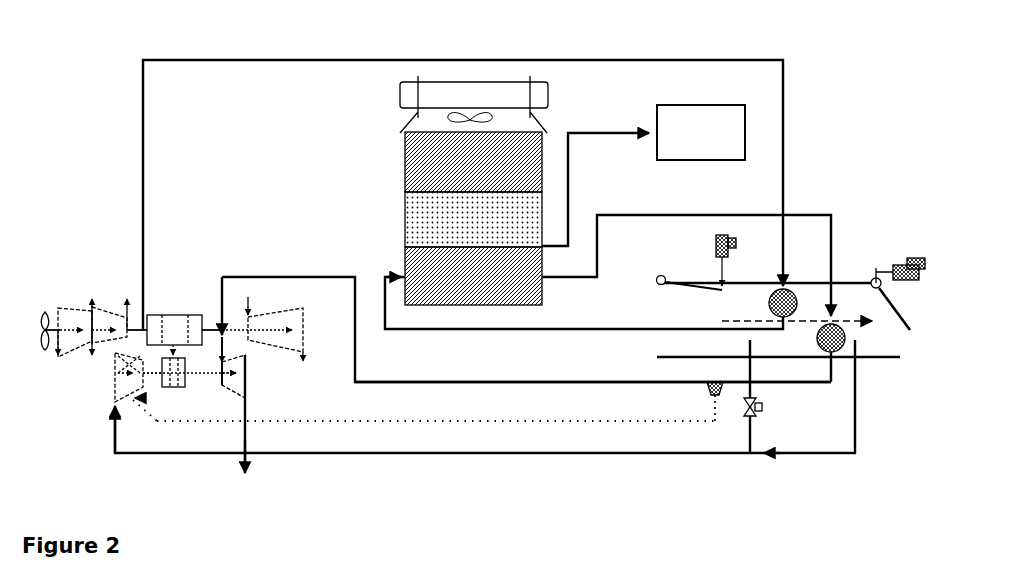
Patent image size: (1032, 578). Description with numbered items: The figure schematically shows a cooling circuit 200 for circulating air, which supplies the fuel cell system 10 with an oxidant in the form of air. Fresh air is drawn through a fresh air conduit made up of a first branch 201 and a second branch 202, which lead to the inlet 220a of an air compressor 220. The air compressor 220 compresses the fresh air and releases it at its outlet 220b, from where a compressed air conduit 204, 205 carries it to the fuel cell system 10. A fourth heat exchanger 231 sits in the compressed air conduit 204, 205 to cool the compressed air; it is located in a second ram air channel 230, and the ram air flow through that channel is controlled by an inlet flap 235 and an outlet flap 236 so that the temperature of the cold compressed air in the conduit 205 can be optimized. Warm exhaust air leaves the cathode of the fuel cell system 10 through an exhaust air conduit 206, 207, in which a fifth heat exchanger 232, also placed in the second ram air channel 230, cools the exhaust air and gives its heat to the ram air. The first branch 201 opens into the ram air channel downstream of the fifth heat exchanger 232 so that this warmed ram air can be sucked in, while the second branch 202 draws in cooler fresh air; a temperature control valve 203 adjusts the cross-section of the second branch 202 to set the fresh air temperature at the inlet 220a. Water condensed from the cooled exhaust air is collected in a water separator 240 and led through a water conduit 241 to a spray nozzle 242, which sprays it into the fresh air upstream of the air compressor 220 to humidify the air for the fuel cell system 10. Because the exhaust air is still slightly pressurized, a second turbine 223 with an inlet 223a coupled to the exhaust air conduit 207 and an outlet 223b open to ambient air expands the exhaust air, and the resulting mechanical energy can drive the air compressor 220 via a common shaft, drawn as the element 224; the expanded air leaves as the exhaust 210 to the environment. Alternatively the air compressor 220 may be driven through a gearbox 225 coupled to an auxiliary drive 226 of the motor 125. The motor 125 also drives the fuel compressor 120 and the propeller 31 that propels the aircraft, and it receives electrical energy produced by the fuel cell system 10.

The cooling circuit 200 is at (247, 21).
The compressed air conduit 204 is at (382, 58).
The fuel cell system 10 is at (388, 207).
The compressed air conduit 205 is at (567, 334).
The exhaust air conduit 207 is at (513, 383).
The exhaust air conduit 206 is at (802, 214).
The fourth heat exchanger 231 is at (797, 284).
The inlet flap 235 is at (692, 252).
The second ram air channel 230 is at (839, 275).
The outlet flap 236 is at (900, 334).
The fifth heat exchanger 232 is at (840, 344).
The first branch 201 is at (857, 438).
The second branch 202 is at (751, 423).
The temperature control valve 203 is at (747, 408).
The water separator 240 is at (712, 393).
The water conduit 241 is at (408, 423).
The propeller 31 is at (45, 315).
The fuel compressor 120 is at (87, 283).
The motor 125 is at (163, 312).
The auxiliary drive 226 is at (175, 357).
The shaft 224 is at (210, 378).
The gearbox 225 is at (180, 383).
The spray nozzle 242 is at (140, 433).
The air compressor 220 is at (108, 384).
The outlet 220b is at (116, 364).
The inlet 220a is at (113, 406).
The inlet 223a is at (228, 349).
The second turbine 223 is at (244, 383).
The outlet 223b is at (240, 403).
The exhaust 210 is at (252, 462).